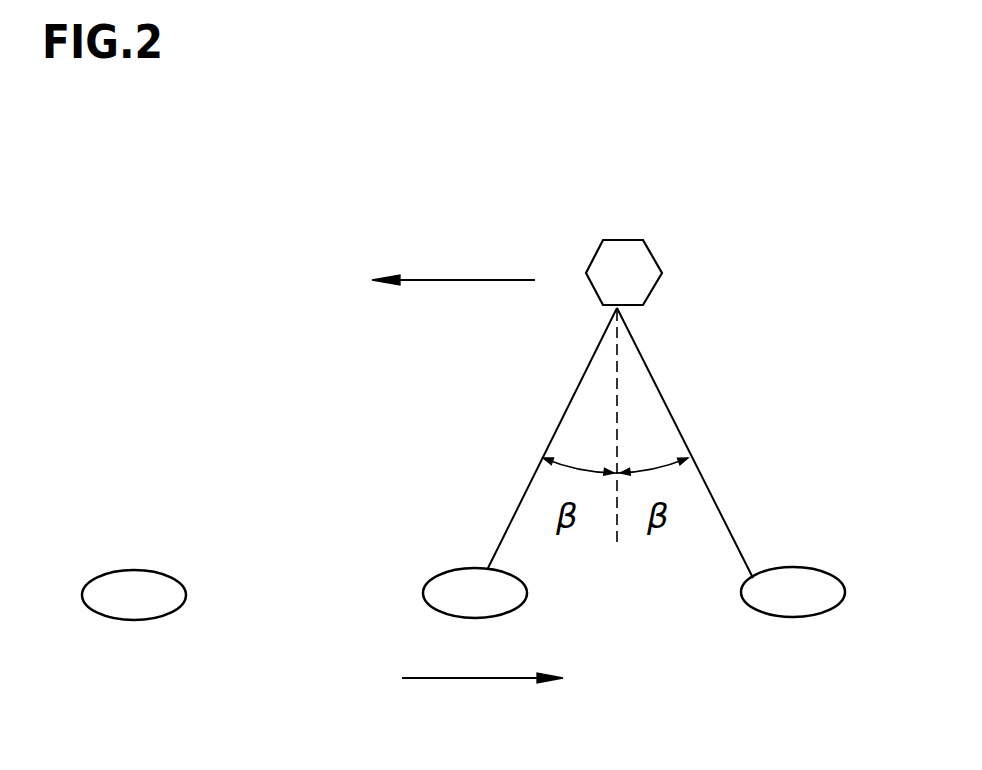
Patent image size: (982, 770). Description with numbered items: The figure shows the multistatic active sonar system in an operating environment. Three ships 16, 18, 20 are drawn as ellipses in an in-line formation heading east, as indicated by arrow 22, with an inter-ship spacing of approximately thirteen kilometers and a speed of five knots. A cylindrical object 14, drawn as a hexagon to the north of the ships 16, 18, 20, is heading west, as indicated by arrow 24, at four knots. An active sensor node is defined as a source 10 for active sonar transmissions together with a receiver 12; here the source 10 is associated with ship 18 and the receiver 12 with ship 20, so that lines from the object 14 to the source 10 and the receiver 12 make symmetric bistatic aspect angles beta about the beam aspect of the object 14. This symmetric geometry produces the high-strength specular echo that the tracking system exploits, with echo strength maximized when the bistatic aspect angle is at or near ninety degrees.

The source 10 is at (443, 600).
The receiver 12 is at (815, 600).
The object 14 is at (660, 246).
The ship 16 is at (120, 560).
The ship 18 is at (451, 560).
The ship 20 is at (822, 560).
The arrow 22 is at (470, 680).
The arrow 24 is at (463, 280).